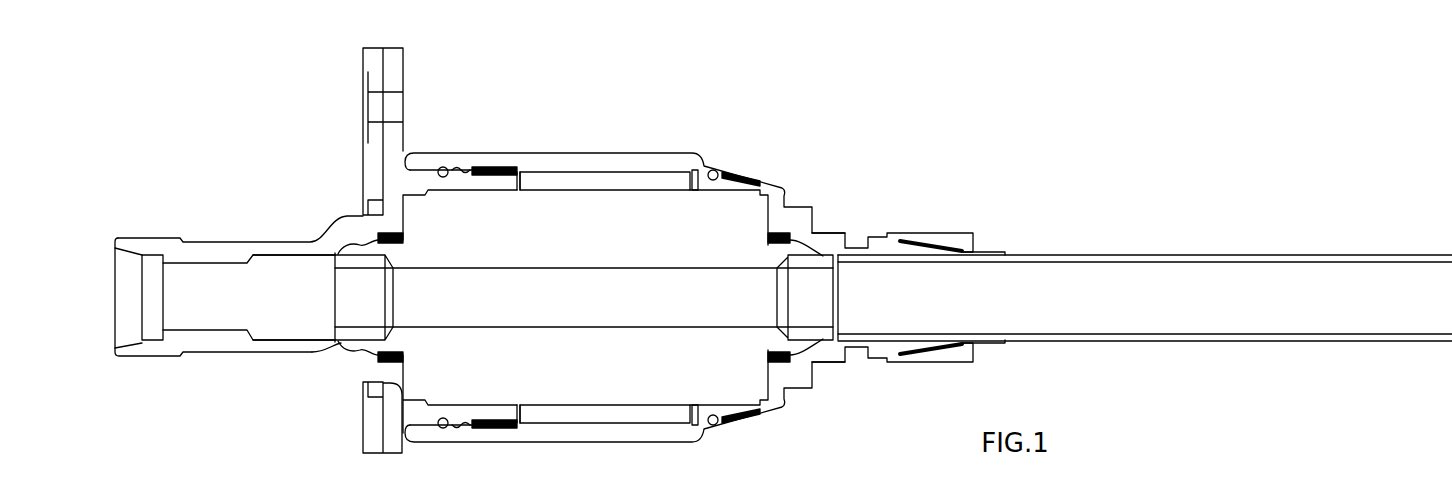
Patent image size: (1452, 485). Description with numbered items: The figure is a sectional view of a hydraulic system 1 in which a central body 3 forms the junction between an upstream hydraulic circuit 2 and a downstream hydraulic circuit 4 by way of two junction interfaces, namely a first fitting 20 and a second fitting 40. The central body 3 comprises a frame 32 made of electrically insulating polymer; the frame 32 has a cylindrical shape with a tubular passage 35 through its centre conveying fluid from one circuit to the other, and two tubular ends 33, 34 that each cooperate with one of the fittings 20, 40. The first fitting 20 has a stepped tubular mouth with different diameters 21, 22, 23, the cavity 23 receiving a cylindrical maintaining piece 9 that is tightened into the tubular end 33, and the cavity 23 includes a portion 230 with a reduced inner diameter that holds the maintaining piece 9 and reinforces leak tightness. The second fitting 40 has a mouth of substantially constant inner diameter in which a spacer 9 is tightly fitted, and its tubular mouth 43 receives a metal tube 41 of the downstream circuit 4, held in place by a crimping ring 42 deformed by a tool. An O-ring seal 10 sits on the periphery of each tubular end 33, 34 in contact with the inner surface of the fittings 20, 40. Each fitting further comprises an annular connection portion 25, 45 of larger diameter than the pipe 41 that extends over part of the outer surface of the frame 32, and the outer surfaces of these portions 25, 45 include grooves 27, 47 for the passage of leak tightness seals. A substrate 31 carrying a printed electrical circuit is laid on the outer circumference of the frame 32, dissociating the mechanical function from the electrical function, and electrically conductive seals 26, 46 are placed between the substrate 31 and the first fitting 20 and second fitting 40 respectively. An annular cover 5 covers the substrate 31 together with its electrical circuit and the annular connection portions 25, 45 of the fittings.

The hydraulic system 1 is at (783, 261).
The upstream hydraulic circuit 2 is at (259, 250).
The first fitting 20 is at (338, 220).
The tubular mouth diameter 21 is at (137, 355).
The tubular mouth diameter 22 is at (207, 340).
The cavity 23 is at (277, 341).
The reduced inner diameter portion 230 is at (341, 344).
The tubular end 33 is at (358, 356).
The tubular passage 35 is at (555, 315).
The central body 3 is at (691, 277).
The annular cover 5 is at (650, 160).
The substrate 31 is at (630, 185).
The frame 32 is at (600, 392).
The groove 27 is at (443, 167).
The annular connection portion 25 is at (482, 165).
The electrically conductive seal 26 is at (517, 168).
The electrically conductive seal 46 is at (700, 172).
The annular connection portion 45 is at (710, 170).
The groove 47 is at (733, 175).
The cylindrical maintaining piece 9 is at (378, 262).
The O-ring seal 10 is at (408, 348).
The second fitting 40 is at (827, 233).
The tubular end 34 is at (808, 361).
The ring 42 is at (942, 233).
The tubular mouth 43 is at (872, 362).
The downstream hydraulic circuit 4 is at (1114, 312).
The tube 41 is at (1112, 278).